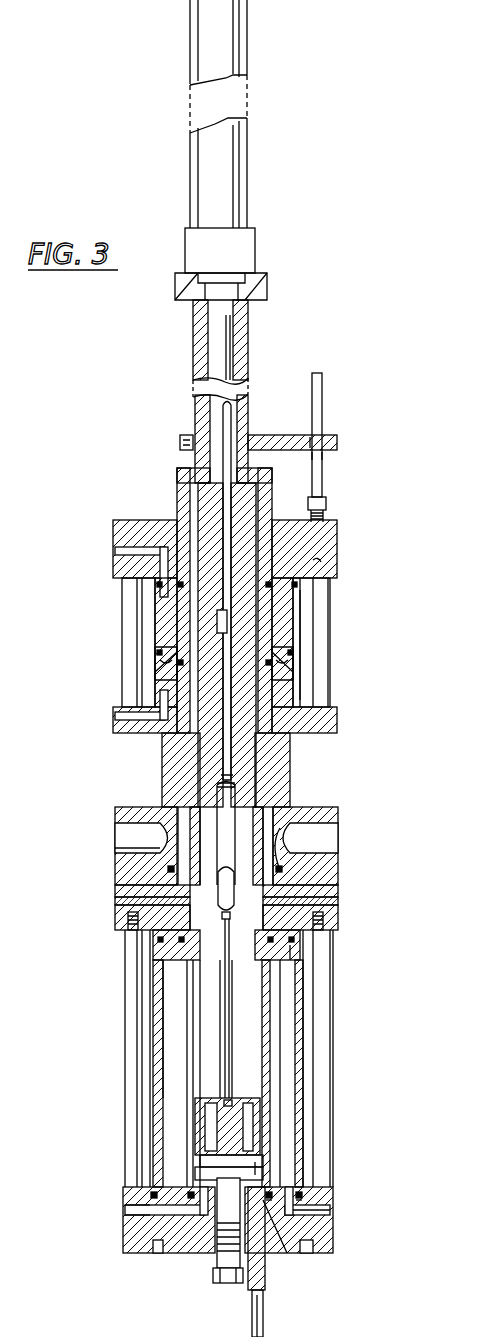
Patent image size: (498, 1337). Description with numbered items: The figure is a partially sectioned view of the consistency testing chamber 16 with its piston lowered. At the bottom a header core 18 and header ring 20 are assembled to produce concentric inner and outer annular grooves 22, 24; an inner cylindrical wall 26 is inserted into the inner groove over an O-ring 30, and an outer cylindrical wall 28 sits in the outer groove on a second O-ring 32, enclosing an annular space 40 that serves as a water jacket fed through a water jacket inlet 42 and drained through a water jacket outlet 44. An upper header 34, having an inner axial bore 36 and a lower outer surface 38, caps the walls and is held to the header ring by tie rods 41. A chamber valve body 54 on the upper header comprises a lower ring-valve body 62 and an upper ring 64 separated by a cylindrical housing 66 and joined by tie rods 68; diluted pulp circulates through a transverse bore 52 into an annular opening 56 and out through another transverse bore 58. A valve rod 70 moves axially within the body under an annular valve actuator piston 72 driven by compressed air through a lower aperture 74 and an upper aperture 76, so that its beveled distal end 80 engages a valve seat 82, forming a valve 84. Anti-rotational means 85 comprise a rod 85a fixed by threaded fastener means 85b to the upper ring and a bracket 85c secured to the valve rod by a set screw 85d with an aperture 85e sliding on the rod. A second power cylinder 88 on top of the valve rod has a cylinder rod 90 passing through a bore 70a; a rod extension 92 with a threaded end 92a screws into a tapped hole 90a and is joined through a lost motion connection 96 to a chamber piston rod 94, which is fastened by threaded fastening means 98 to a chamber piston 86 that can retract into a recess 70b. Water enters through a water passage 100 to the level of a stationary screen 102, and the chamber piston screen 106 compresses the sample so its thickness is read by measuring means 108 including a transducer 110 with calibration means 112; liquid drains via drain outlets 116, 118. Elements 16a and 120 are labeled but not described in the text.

The consistency testing chamber 16 is at (115, 514).
The port 16a is at (258, 1168).
The header core 18 is at (162, 1250).
The header ring 20 is at (333, 1232).
The inner annular groove 22 is at (277, 1232).
The outer annular groove 24 is at (274, 1202).
The inner cylindrical wall 26 is at (270, 1012).
The outer cylindrical wall 28 is at (303, 1060).
The O-ring 30 is at (266, 1240).
The O-ring 32 is at (302, 1197).
The upper header 34 is at (115, 924).
The inner axial bore 36 is at (190, 978).
The lower outer surface 38 is at (292, 950).
The enclosed annular space 40 is at (292, 1084).
The tie rods 41 is at (125, 966).
The water jacket inlet 42 is at (333, 1214).
The water jacket outlet 44 is at (338, 906).
The transverse bore 52 is at (115, 830).
The chamber valve body 54 is at (337, 714).
The annular opening 56 is at (262, 830).
The transverse bore 58 is at (338, 824).
The lower ring-valve body 62 is at (292, 748).
The upper ring 64 is at (338, 540).
The cylindrical housing 66 is at (296, 598).
The tie rods 68 is at (122, 598).
The valve rod 70 is at (198, 742).
The bore 70a is at (222, 328).
The recess 70b is at (195, 815).
The annular valve actuator piston 72 is at (282, 655).
The lower compressed air aperture 74 is at (115, 716).
The upper compressed air aperture 76 is at (115, 550).
The distal end 80 is at (290, 862).
The valve seat 82 is at (115, 850).
The valve 84 is at (288, 870).
The anti-rotational means 85 is at (338, 438).
The rod 85a is at (350, 461).
The threaded fastener means 85b is at (327, 504).
The bracket 85c is at (272, 435).
The set screw 85d is at (182, 442).
The aperture 85e is at (326, 441).
The chamber piston 86 is at (195, 1120).
The second power cylinder 88 is at (227, 111).
The cylinder rod 90 is at (225, 400).
The tapped hole 90a is at (222, 776).
The rod extension 92 is at (238, 830).
The threaded end 92a is at (245, 785).
The chamber piston rod 94 is at (234, 1042).
The lost motion connection 96 is at (166, 936).
The threaded fastening means 98 is at (233, 1103).
The water passage 100 is at (115, 892).
The stationary screen 102 is at (195, 1172).
The chamber piston screen 106 is at (200, 1160).
The measuring means 108 is at (213, 1276).
The transducer 110 is at (215, 1258).
The calibration means 112 is at (265, 1320).
The drain outlet 116 is at (145, 1220).
The drain outlet 118 is at (128, 1210).
The screw 120 is at (115, 903).